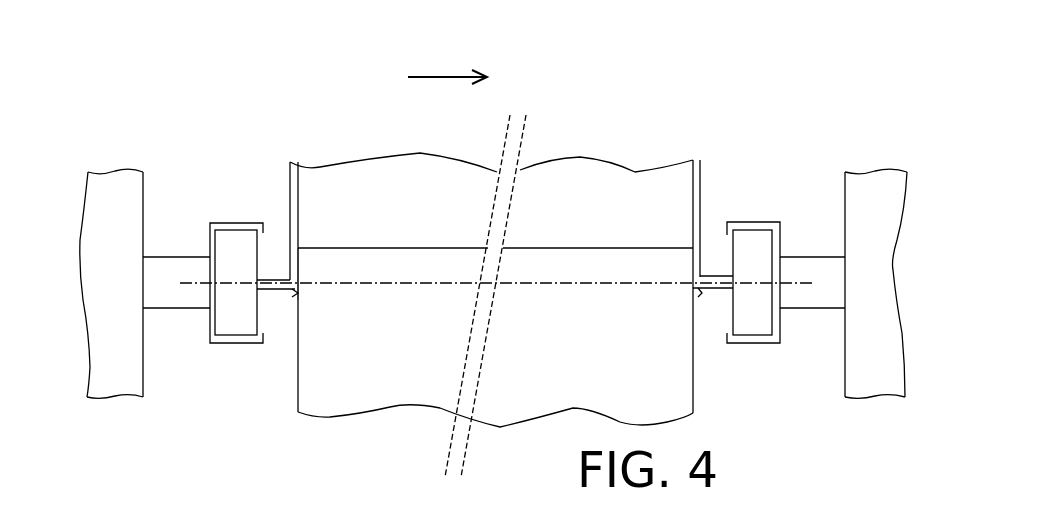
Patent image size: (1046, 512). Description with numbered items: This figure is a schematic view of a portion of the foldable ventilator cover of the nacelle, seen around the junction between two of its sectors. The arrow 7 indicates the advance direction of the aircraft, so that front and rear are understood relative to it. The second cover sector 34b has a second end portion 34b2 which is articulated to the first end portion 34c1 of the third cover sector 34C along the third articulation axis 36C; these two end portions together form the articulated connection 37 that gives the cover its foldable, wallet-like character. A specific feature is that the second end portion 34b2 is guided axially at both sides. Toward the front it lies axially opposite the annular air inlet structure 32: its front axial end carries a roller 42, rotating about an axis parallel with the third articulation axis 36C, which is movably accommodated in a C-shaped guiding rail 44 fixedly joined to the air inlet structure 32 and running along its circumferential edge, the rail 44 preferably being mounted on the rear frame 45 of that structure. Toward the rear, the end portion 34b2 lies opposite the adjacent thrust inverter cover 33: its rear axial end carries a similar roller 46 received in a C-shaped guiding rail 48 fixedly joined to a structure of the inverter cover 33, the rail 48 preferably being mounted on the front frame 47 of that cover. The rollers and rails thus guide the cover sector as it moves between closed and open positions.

The arrow 7 is at (425, 77).
The air inlet structure 32 is at (886, 165).
The thrust inverter cover 33 is at (109, 165).
The second cover sector 34b is at (330, 165).
The second end portion 34b2 is at (400, 247).
The third cover sector 34C is at (360, 385).
The first end portion 34c1 is at (327, 267).
The third articulation axis 36C is at (593, 278).
The articulated connection 37 is at (273, 212).
The roller 42 is at (753, 245).
The C-shaped guiding rail 44 is at (780, 235).
The rear frame 45 is at (845, 357).
The roller 46 is at (236, 245).
The front frame 47 is at (143, 363).
The C-shaped guiding rail 48 is at (210, 237).